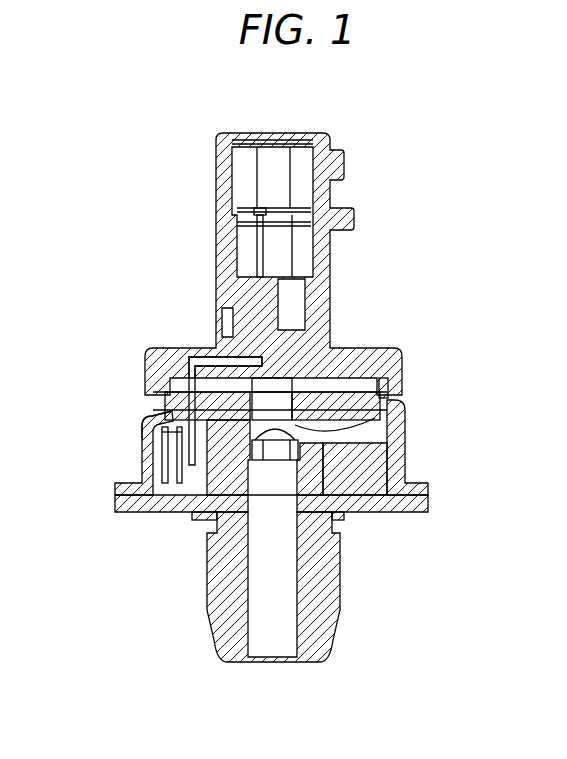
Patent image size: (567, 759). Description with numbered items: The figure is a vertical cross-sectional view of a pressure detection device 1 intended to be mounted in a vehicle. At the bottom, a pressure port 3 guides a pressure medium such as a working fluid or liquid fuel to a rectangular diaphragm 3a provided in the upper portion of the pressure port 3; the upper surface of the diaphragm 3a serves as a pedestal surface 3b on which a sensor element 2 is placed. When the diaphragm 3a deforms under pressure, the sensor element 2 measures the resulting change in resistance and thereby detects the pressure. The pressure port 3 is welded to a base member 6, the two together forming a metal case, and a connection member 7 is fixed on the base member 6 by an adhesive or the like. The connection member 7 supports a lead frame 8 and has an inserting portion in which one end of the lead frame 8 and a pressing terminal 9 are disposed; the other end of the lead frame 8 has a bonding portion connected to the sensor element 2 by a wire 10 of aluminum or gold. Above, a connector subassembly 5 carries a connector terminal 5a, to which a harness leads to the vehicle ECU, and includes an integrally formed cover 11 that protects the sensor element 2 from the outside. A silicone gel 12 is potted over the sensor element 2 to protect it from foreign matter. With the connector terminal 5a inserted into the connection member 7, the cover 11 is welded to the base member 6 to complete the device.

The pressure detection device 1 is at (70, 83).
The sensor element 2 is at (245, 425).
The pressure port 3 is at (213, 610).
The diaphragm 3a is at (272, 455).
The pedestal surface 3b is at (296, 452).
The connector subassembly 5 is at (180, 350).
The connector terminal 5a is at (258, 240).
The base member 6 is at (120, 512).
The connection member 7 is at (405, 425).
The lead frame 8 is at (170, 520).
The pressing terminal 9 is at (148, 452).
The wire 10 is at (390, 356).
The cover 11 is at (140, 420).
The silicone gel 12 is at (325, 405).